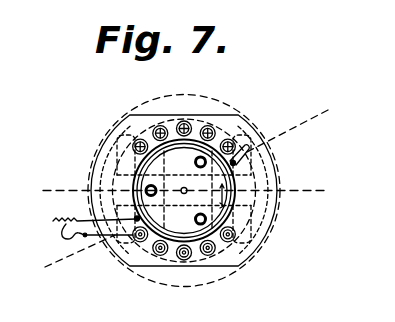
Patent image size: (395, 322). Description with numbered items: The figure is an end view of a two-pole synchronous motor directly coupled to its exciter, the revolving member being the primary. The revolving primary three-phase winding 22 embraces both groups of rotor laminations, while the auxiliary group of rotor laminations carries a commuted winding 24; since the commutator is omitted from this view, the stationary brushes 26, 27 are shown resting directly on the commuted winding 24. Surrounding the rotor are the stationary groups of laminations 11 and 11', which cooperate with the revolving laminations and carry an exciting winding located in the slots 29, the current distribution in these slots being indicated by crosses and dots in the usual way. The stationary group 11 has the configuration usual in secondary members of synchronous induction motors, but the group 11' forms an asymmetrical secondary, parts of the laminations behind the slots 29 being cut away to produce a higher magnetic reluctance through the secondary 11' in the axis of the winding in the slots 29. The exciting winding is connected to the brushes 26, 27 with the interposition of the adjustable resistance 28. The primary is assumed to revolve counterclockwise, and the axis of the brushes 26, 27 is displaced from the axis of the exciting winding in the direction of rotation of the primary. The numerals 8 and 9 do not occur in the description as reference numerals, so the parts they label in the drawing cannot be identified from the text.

The screws 8 is at (153, 129).
The clamping jaws 9 is at (103, 172).
The stationary group of laminations 11 is at (184, 181).
The asymmetrical secondary 11' is at (190, 181).
The primary three-phase winding 22 is at (192, 147).
The commuted winding 24 is at (172, 232).
The brush 26 is at (240, 162).
The brush 27 is at (136, 221).
The adjustable resistance 28 is at (91, 220).
The slots 29 is at (189, 126).